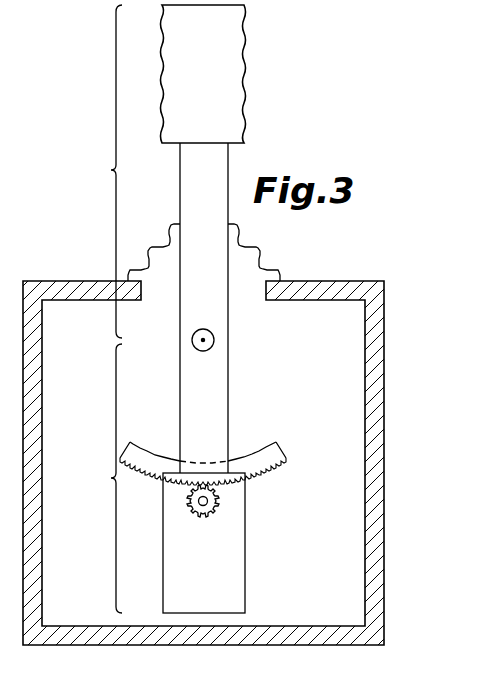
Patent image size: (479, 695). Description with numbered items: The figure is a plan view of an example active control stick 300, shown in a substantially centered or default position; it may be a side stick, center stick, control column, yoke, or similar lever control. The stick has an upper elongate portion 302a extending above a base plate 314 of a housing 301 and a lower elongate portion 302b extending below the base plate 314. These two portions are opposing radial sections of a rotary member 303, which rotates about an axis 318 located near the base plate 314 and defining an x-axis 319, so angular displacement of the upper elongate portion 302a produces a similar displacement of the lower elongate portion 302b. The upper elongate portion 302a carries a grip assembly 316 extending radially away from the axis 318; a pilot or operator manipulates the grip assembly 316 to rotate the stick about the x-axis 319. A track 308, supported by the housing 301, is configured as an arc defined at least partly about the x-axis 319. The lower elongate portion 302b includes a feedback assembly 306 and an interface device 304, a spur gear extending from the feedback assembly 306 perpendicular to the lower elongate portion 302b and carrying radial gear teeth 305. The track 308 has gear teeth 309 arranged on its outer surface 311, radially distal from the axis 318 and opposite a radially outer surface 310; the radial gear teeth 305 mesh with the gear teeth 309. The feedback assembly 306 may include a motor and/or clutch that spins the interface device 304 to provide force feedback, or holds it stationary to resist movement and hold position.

The active control stick 300 is at (72, 142).
The housing 301 is at (387, 296).
The upper elongate portion 302a is at (92, 171).
The lower elongate portion 302b is at (92, 478).
The rotary member 303 is at (232, 163).
The interface device 304 is at (248, 536).
The radial gear teeth 305 is at (199, 521).
The feedback assembly 306 is at (246, 557).
The track 308 is at (240, 446).
The gear teeth 309 is at (290, 460).
The radially outer surface 310 is at (263, 452).
The outer surface 311 is at (258, 472).
The base plate 314 is at (326, 281).
The grip assembly 316 is at (244, 76).
The axis 318 is at (213, 333).
The x-axis 319 is at (205, 342).